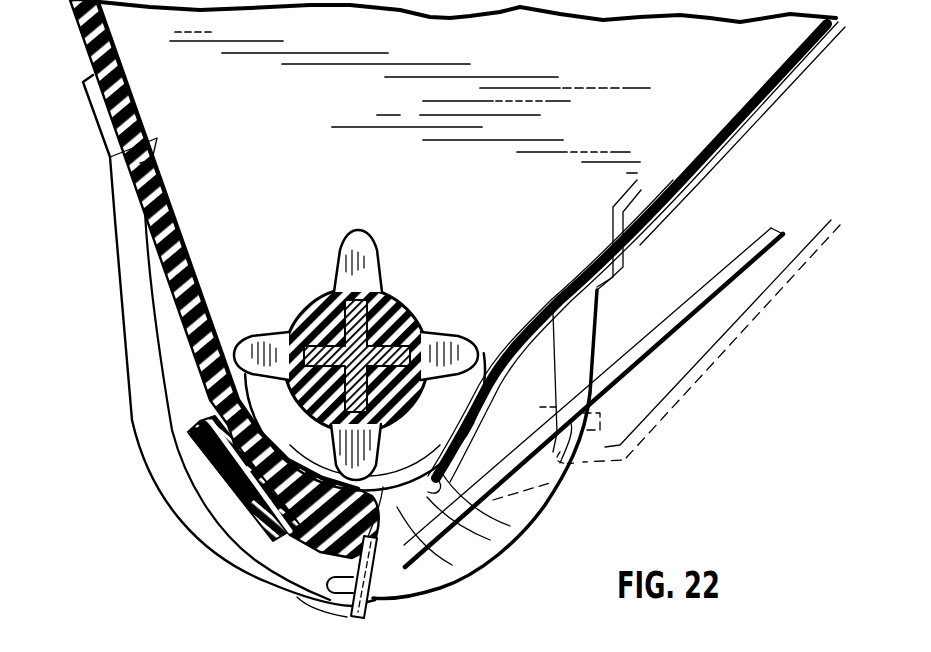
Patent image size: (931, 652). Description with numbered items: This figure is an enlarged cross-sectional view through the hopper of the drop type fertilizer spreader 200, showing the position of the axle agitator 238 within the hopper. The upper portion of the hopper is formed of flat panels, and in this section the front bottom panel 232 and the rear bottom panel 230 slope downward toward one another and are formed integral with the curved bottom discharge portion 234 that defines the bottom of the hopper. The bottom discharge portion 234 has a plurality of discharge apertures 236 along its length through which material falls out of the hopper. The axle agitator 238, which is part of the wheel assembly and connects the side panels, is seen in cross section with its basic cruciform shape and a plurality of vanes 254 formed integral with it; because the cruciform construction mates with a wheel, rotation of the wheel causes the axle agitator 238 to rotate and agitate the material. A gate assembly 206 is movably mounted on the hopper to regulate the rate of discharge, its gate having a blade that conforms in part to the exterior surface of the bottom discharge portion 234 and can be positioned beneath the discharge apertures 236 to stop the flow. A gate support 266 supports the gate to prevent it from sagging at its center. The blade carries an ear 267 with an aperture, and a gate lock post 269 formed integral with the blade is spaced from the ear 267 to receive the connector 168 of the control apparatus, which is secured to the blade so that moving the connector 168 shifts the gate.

The drop type fertilizer spreader 200 is at (113, 232).
The front bottom panel 232 is at (95, 58).
The rear bottom panel 230 is at (740, 112).
The axle agitator 238 is at (424, 319).
The vanes 254 is at (357, 243).
The gate support 266 is at (604, 280).
The gate assembly 206 is at (199, 477).
The bottom discharge portion 234 is at (510, 526).
The connector 168 is at (490, 540).
The discharge apertures 236 is at (452, 565).
The ear 267 is at (323, 601).
The gate lock post 269 is at (368, 609).